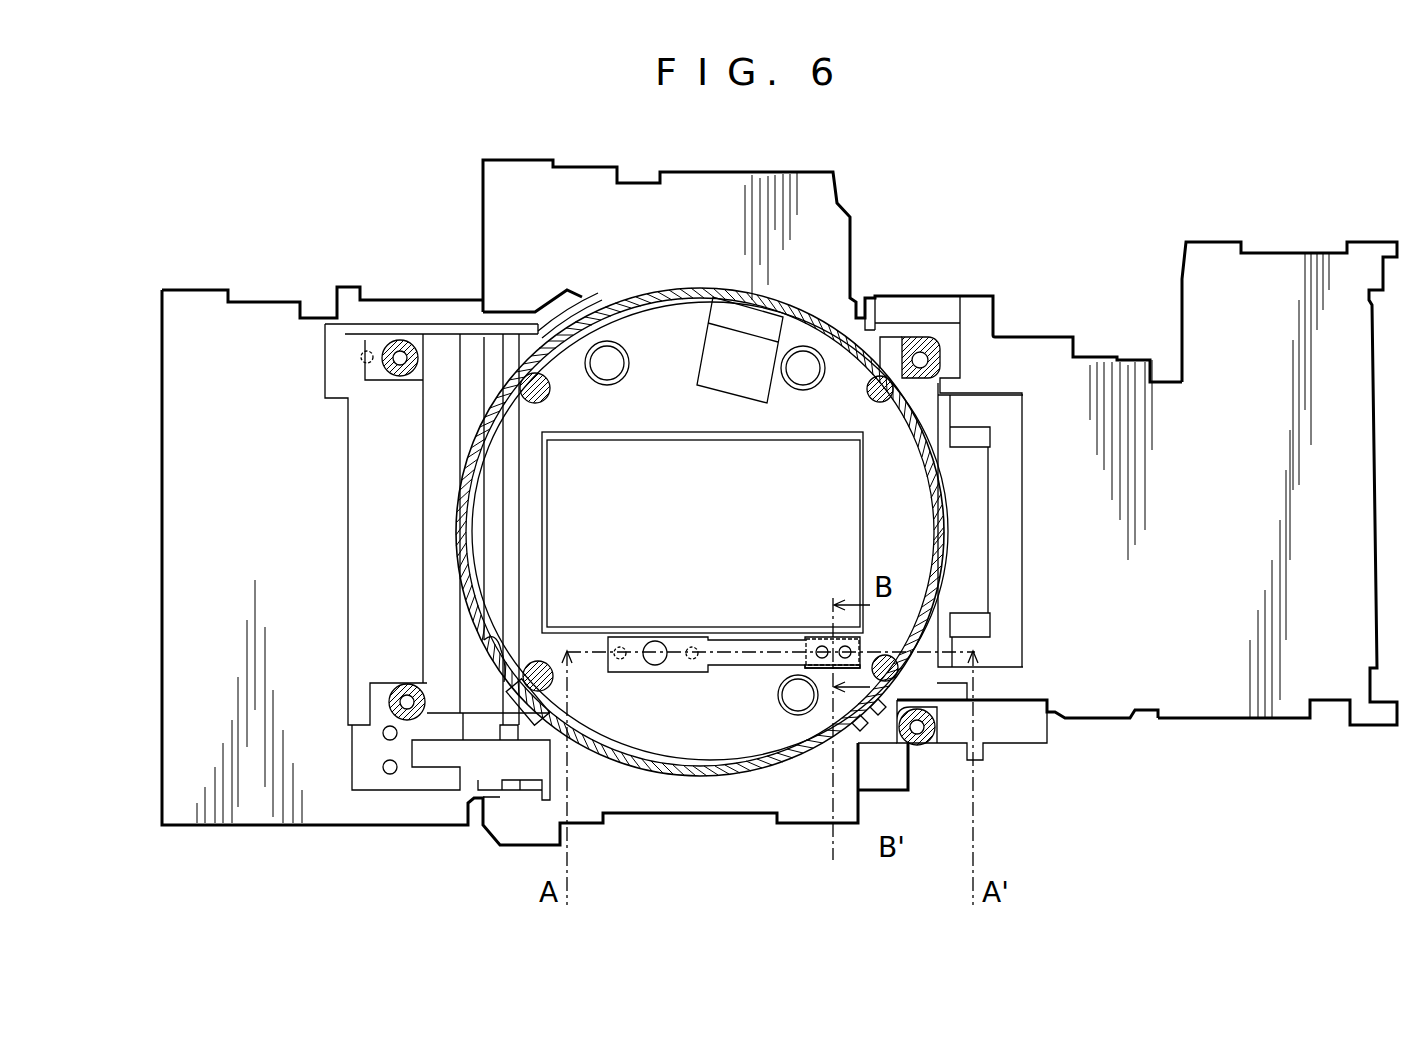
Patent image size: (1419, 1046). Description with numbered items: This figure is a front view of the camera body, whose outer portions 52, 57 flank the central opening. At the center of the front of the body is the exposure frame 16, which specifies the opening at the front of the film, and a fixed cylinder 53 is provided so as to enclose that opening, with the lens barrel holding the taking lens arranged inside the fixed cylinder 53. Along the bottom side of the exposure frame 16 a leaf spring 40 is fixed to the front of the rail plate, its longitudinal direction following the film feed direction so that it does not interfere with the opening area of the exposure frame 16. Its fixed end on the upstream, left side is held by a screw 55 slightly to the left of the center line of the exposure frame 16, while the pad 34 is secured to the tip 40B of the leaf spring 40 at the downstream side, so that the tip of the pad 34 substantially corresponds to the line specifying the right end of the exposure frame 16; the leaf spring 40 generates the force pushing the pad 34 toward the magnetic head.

The left camera body portion 52 is at (295, 272).
The right camera body portion 57 is at (1122, 340).
The exposure frame 16 is at (710, 502).
The leaf spring 40 is at (750, 645).
The tip of the leaf spring 40B is at (818, 638).
The screw 55 is at (656, 666).
The pad 34 is at (803, 658).
The fixed cylinder 53 is at (697, 782).